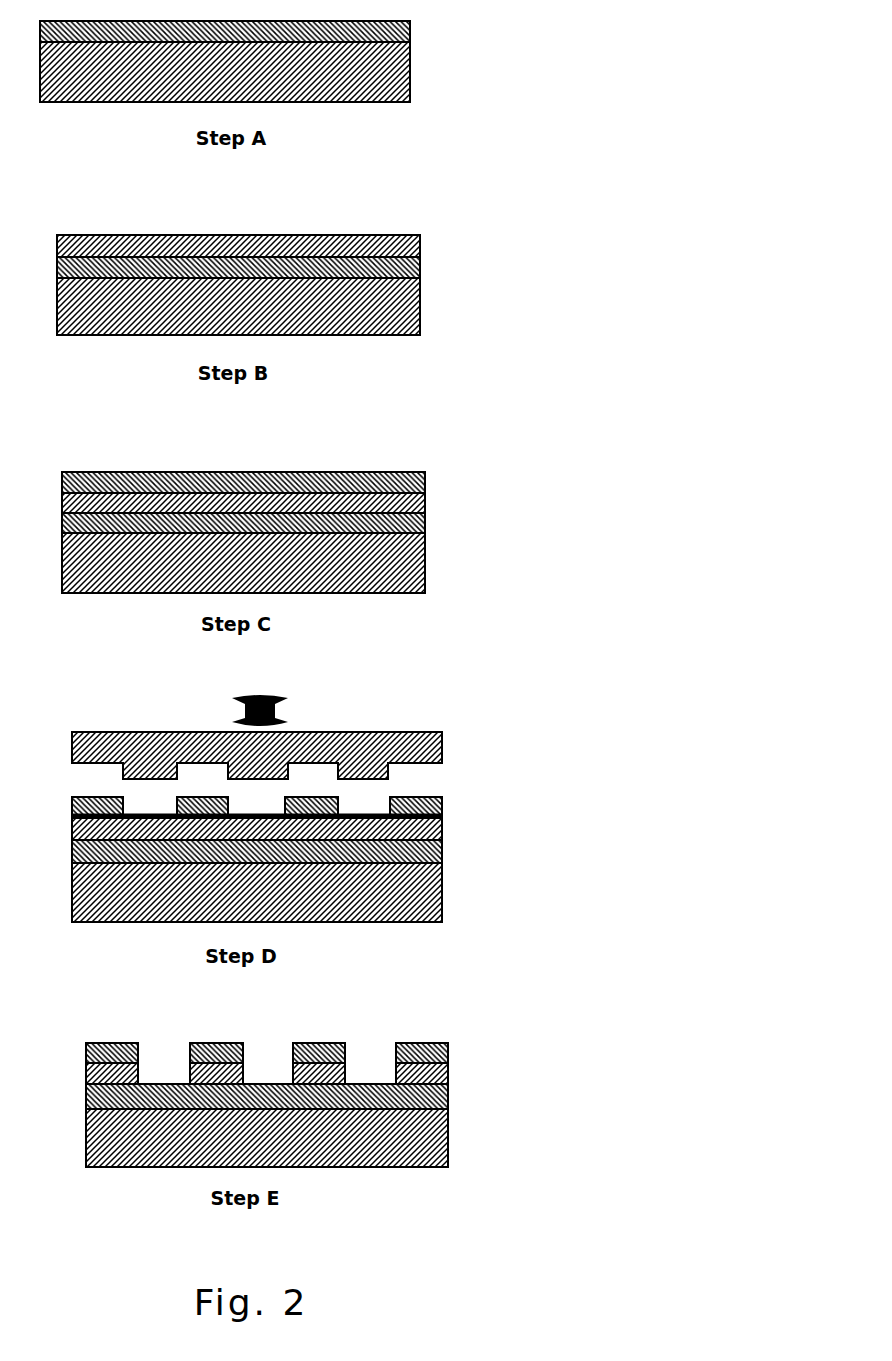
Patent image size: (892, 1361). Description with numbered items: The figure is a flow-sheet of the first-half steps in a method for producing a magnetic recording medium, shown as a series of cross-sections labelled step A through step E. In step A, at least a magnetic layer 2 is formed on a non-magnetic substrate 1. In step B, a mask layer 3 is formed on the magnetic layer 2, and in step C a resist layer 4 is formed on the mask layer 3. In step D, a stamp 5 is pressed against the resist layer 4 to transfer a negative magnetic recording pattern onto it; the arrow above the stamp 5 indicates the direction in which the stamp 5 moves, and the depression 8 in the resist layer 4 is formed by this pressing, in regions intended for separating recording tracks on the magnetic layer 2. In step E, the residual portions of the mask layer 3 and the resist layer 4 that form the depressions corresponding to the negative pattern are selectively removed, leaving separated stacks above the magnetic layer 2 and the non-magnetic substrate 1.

The non-magnetic substrate 1 is at (410, 75).
The magnetic layer 2 is at (410, 29).
The mask layer 3 is at (420, 245).
The resist layer 4 is at (425, 480).
The stamp 5 is at (442, 750).
The depression in resist layer 8 is at (363, 815).